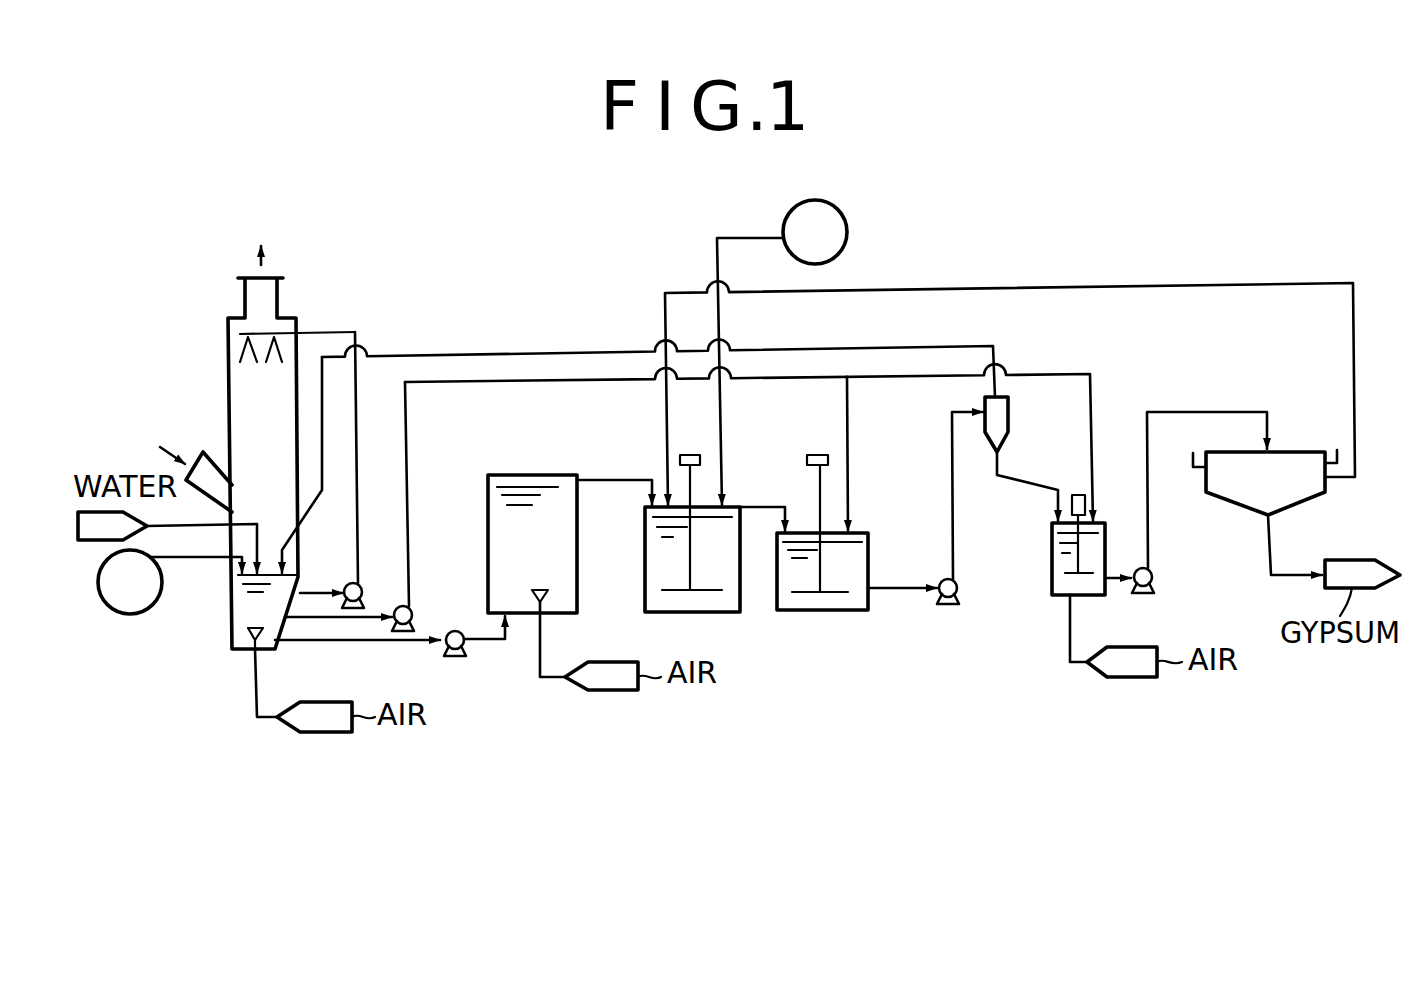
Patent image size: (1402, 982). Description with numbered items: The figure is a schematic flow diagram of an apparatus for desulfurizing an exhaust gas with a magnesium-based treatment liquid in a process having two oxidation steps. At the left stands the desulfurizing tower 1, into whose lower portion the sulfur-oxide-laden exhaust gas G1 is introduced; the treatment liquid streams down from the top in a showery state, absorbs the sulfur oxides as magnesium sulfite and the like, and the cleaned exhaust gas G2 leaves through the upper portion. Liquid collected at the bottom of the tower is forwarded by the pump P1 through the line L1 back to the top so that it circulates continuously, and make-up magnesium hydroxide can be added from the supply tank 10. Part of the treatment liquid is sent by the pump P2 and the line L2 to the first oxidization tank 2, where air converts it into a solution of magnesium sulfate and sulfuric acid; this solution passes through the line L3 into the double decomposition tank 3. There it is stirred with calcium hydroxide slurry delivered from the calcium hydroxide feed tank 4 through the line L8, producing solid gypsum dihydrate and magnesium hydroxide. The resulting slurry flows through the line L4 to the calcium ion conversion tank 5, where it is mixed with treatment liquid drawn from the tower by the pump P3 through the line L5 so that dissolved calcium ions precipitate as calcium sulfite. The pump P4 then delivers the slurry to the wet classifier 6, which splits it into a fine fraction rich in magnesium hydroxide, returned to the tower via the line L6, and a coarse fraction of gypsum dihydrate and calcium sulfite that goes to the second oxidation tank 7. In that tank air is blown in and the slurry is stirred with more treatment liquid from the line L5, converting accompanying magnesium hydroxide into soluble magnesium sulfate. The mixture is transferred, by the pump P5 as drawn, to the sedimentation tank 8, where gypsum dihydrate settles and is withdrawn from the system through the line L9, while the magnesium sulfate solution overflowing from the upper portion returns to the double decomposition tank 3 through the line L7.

The desulfurizing tower 1 is at (296, 318).
The first oxidization tank 2 is at (563, 475).
The double decomposition tank 3 is at (734, 507).
The calcium hydroxide feed tank 4 is at (847, 230).
The calcium ion conversion tank 5 is at (870, 537).
The wet classifier 6 is at (1010, 400).
The second oxidation tank 7 is at (1105, 530).
The sedimentation tank 8 is at (1307, 451).
The supply tank 10 is at (162, 586).
The exhaust gas G1 is at (180, 460).
The exhaust gas G2 is at (259, 233).
The line L1 is at (375, 457).
The line L2 is at (493, 645).
The line L3 is at (616, 475).
The line L4 is at (769, 502).
The line L5 is at (749, 447).
The line L6 is at (638, 442).
The line L7 is at (1010, 379).
The line L8 is at (750, 355).
The line L9 is at (1234, 494).
The pump P1 is at (353, 592).
The pump P2 is at (372, 660).
The pump P3 is at (369, 506).
The pump P4 is at (933, 510).
The pump P5 is at (1151, 586).